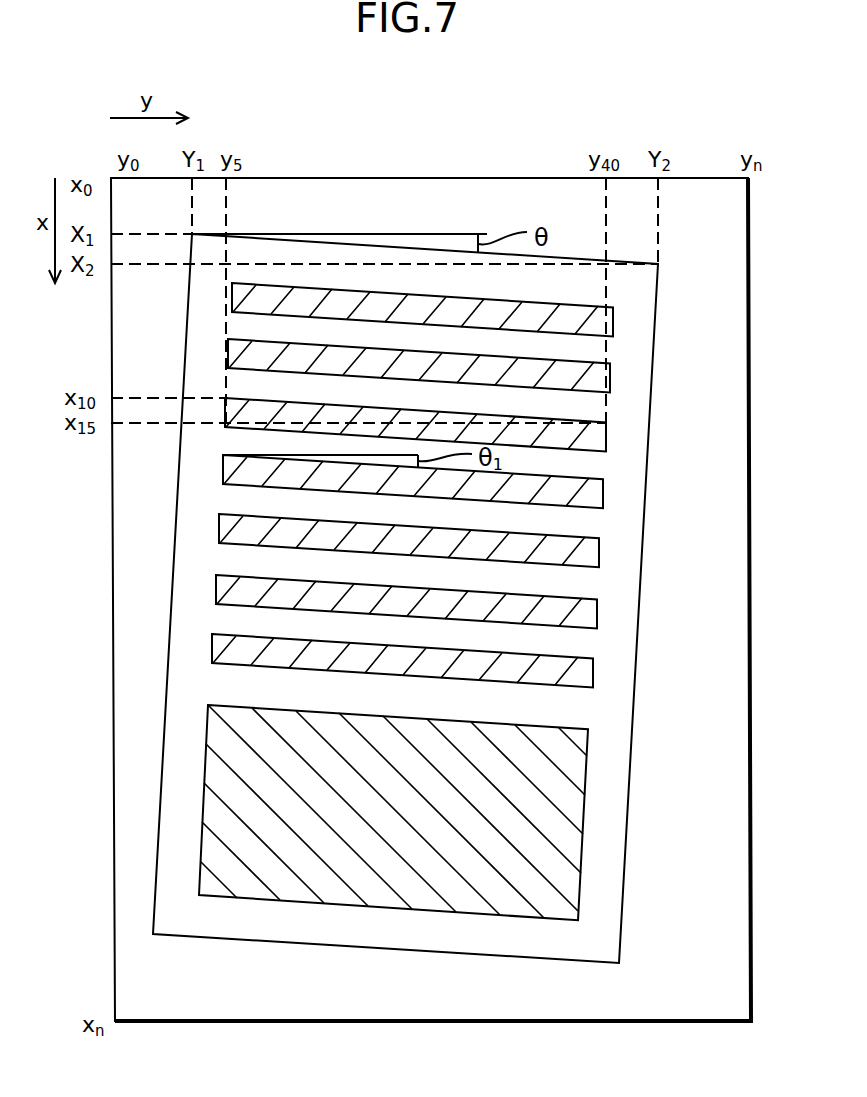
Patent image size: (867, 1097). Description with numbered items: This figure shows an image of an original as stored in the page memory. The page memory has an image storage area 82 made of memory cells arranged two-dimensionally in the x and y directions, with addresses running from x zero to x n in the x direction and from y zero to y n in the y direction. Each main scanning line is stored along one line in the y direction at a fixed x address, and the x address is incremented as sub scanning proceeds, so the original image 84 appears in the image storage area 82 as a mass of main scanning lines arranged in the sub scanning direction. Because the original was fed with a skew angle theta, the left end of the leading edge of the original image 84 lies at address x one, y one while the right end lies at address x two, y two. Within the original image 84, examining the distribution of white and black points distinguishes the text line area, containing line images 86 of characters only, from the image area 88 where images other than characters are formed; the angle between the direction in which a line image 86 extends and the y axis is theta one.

The image storage area 82 is at (748, 328).
The original image 84 is at (640, 593).
The line image 86 is at (613, 322).
The image area 88 is at (578, 835).